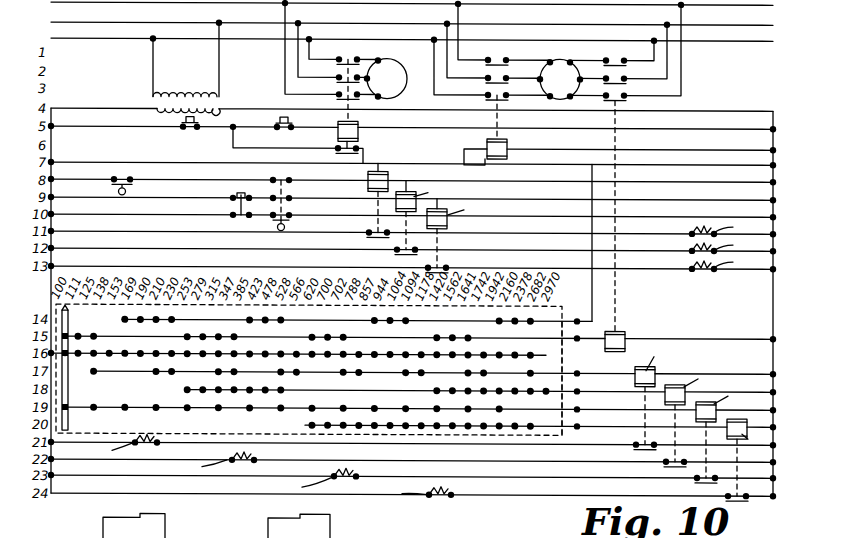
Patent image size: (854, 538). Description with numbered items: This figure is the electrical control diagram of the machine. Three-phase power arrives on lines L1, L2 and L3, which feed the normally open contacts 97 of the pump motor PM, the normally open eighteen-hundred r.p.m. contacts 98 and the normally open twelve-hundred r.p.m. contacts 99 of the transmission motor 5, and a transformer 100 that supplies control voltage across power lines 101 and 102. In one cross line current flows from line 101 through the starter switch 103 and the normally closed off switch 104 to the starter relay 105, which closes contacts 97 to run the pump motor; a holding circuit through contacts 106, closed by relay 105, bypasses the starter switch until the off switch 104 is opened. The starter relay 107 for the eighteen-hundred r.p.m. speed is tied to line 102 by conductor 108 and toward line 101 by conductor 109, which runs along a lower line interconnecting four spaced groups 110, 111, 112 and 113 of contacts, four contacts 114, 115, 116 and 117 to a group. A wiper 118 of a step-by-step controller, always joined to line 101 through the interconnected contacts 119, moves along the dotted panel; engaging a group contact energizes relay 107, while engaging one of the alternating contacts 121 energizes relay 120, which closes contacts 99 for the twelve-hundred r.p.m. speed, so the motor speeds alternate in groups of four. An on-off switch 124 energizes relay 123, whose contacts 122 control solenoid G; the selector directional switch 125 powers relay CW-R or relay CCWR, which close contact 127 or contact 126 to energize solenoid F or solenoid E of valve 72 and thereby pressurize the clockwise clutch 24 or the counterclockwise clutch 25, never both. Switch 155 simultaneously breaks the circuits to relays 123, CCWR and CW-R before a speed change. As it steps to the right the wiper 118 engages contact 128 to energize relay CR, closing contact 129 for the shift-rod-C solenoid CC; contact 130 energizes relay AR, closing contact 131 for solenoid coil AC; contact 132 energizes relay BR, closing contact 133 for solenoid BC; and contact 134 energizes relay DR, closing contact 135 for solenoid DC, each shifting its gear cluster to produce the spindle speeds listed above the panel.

The power line L1 is at (80, 2).
The power line L2 is at (96, 22).
The power line L3 is at (110, 38).
The transmission motor 5 is at (564, 59).
The normally open contacts of the pump motor 97 is at (347, 55).
The normally open 1800 r.p.m. contacts 98 is at (497, 55).
The normally open 1200 r.p.m. contacts 99 is at (618, 56).
The transformer 100 is at (186, 85).
The power line 101 is at (55, 123).
The power line 102 is at (765, 121).
The starter switch 103 is at (183, 126).
The off switch 104 is at (276, 126).
The starter relay 105 is at (358, 125).
The holding contacts 106 is at (338, 150).
The starter relay for 1800 r.p.m. speed 107 is at (488, 143).
The conductor 108 is at (646, 151).
The conductor 109 is at (470, 164).
The group of contacts 110 is at (565, 316).
The group of contacts 111 is at (399, 330).
The group of contacts 112 is at (266, 318).
The group of contacts 113 is at (149, 330).
The contact 114 is at (498, 318).
The contact 115 is at (523, 320).
The contact 116 is at (533, 328).
The contact 117 is at (557, 315).
The wiper 118 is at (68, 395).
The contacts 119 is at (68, 355).
The relay 120 is at (620, 328).
The contacts 121 is at (67, 319).
The normally open contacts 122 is at (367, 230).
The relay 123 is at (384, 174).
The on-off switch 124 is at (110, 175).
The selector directional switch 125 is at (232, 205).
The normally open contact 126 is at (398, 247).
The normally open contact 127 is at (448, 265).
The contact 128 is at (68, 420).
The normally open contact 129 is at (698, 476).
The contact 130 is at (92, 373).
The contact 131 is at (636, 439).
The contact 132 is at (186, 389).
The contact 133 is at (666, 461).
The contact 134 is at (305, 424).
The contact 135 is at (748, 499).
The switch 155 is at (304, 193).
The clockwise clutch 24 is at (95, 531).
The counterclockwise clutch 25 is at (338, 531).
The valve 72 is at (226, 537).
The pump motor PM is at (385, 78).
The counterclockwise relay CCWR is at (431, 215).
The clockwise relay CW-R is at (462, 233).
The relay AR is at (653, 397).
The relay BR is at (691, 416).
The relay CR is at (721, 433).
The relay DR is at (747, 457).
The solenoid G is at (717, 228).
The solenoid E is at (716, 246).
The solenoid F is at (716, 263).
The solenoid coil AC is at (126, 446).
The solenoid BC is at (219, 463).
The switch CC is at (319, 481).
The solenoid DC is at (417, 492).